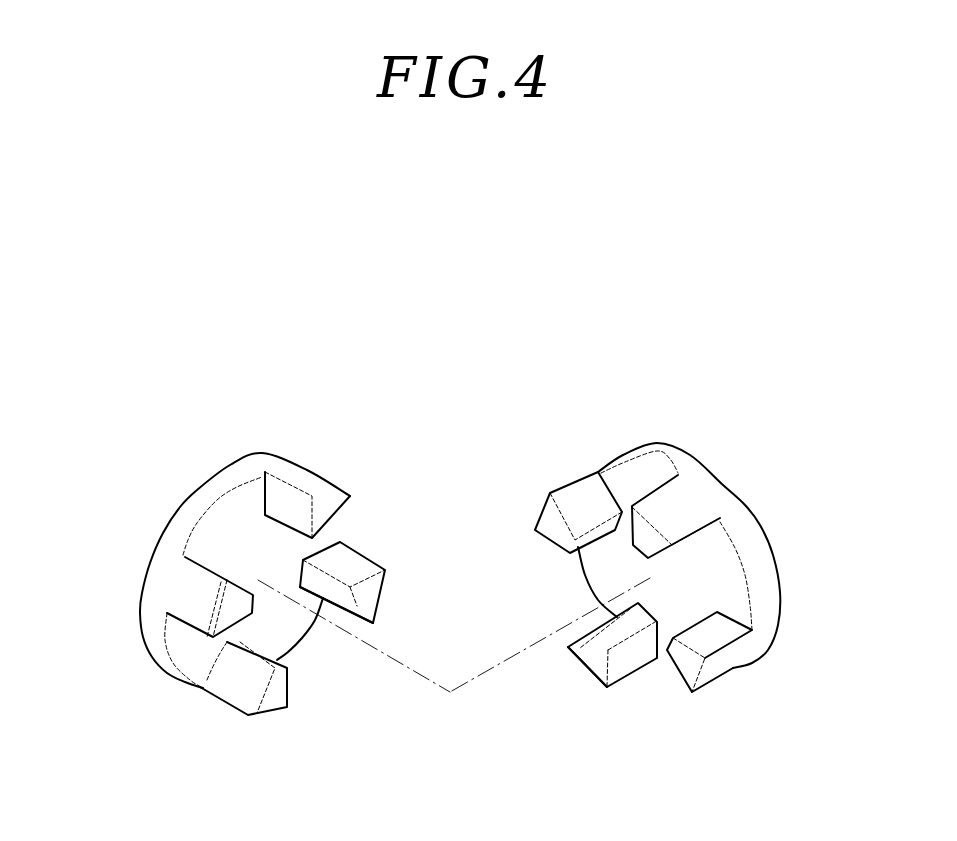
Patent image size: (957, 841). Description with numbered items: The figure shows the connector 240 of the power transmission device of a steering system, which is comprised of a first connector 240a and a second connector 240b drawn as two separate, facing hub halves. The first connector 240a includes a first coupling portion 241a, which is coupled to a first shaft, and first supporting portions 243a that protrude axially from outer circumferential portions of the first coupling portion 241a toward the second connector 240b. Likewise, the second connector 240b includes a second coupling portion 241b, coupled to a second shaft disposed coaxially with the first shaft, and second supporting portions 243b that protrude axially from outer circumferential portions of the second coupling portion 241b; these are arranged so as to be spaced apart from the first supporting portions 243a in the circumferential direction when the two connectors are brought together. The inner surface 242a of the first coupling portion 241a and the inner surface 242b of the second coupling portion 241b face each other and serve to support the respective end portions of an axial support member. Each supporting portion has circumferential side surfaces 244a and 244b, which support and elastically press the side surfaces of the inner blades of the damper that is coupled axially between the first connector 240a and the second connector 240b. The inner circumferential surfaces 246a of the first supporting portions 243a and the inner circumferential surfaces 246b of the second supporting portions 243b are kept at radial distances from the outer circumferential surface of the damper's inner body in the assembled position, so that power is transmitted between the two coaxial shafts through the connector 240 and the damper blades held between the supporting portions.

The connector 240 is at (198, 340).
The first connector 240a is at (168, 467).
The second connector 240b is at (745, 465).
The first coupling portion 241a is at (192, 512).
The second coupling portion 241b is at (748, 540).
The inner surface of the first coupling portion 242a is at (238, 533).
The inner surface of the second coupling portion 242b is at (707, 582).
The first supporting portions 243a is at (193, 598).
The second supporting portions 243b is at (721, 666).
The side surfaces of the first supporting portions 244a is at (350, 567).
The side surfaces of the second supporting portions 244b is at (627, 660).
The inner circumferential surfaces of the first supporting portions 246a is at (333, 593).
The inner circumferential surfaces of the second supporting portions 246b is at (608, 637).